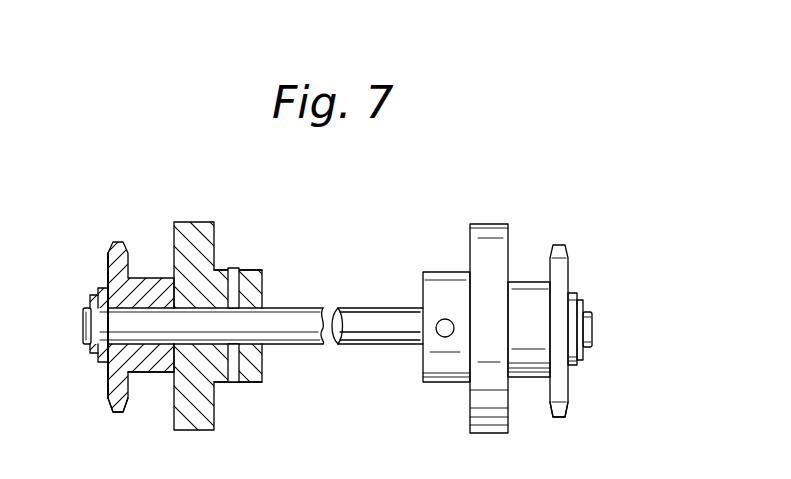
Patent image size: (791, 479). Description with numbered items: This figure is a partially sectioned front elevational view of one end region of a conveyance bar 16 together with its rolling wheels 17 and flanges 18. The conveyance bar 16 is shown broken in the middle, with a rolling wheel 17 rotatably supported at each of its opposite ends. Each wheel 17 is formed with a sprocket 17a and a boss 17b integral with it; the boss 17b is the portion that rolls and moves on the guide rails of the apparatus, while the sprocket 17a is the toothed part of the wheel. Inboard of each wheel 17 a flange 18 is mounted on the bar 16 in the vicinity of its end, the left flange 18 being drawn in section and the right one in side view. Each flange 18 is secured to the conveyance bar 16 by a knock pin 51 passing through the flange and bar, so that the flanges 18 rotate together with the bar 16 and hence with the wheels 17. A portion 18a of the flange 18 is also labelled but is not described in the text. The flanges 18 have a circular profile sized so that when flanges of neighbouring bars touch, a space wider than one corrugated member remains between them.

The conveyance bar 16 is at (292, 317).
The rolling wheel 17 is at (157, 272).
The sprocket 17a is at (104, 413).
The boss 17b is at (157, 372).
The flange 18 is at (197, 268).
The collar boss portion 18a is at (254, 378).
The knock pin 51 is at (234, 322).